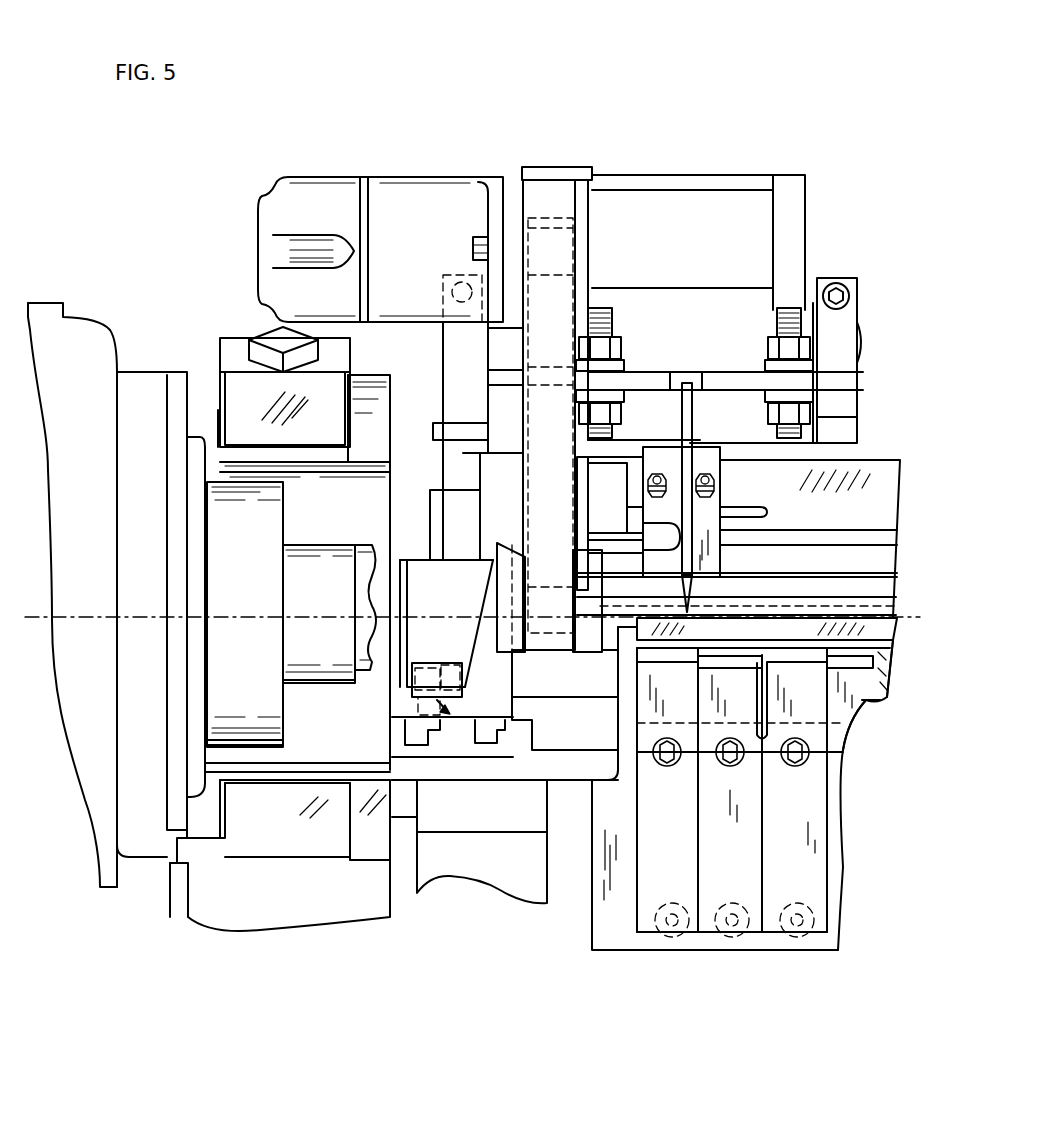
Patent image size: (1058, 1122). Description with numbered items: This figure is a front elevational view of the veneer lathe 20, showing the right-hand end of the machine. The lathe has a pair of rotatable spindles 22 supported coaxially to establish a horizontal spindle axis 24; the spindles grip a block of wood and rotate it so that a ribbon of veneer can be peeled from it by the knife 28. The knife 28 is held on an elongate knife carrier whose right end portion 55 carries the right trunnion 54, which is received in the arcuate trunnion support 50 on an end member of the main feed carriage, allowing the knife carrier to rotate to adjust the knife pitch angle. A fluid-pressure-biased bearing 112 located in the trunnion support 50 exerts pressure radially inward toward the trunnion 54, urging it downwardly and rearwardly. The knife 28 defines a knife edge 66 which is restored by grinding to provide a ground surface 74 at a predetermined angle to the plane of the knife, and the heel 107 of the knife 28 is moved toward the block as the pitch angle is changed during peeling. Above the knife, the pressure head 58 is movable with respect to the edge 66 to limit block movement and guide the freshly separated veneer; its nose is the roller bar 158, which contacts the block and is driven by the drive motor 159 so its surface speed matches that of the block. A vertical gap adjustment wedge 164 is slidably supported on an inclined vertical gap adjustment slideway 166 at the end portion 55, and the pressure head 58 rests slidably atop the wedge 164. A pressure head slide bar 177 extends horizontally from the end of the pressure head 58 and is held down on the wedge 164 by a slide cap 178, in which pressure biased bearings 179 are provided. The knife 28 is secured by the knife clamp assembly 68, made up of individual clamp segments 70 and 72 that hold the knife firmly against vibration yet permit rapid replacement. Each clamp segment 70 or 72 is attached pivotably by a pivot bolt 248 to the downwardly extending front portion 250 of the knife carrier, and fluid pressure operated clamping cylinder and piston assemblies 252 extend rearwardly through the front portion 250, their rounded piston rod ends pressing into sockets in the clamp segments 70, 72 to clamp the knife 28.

The veneer lathe 20 is at (646, 170).
The rotatable spindles 22 is at (320, 552).
The spindle axis 24 is at (243, 612).
The knife 28 is at (884, 677).
The trunnion support 50 is at (230, 392).
The right trunnion 54 is at (385, 490).
The right end portion 55 is at (513, 866).
The pressure head 58 is at (818, 570).
The knife edge 66 is at (758, 614).
The knife clamp assembly 68 is at (840, 781).
The clamp segment 70 is at (676, 866).
The clamp segment 72 is at (852, 710).
The ground surface 74 is at (890, 629).
The heel of the knife 107 is at (880, 690).
The fluid-pressure-biased bearing 112 is at (265, 342).
The roller bar 158 is at (893, 610).
The drive motor 159 is at (450, 187).
The vertical gap adjustment wedge 164 is at (445, 748).
The vertical gap adjustment slideway 166 is at (495, 748).
The pressure head slide bar 177 is at (425, 700).
The slide cap 178 is at (427, 663).
The pressure biased bearings 179 is at (462, 690).
The pivot bolt 248 is at (730, 766).
The front portion of the knife carrier 250 is at (613, 933).
The clamping cylinder and piston assemblies 252 is at (668, 937).